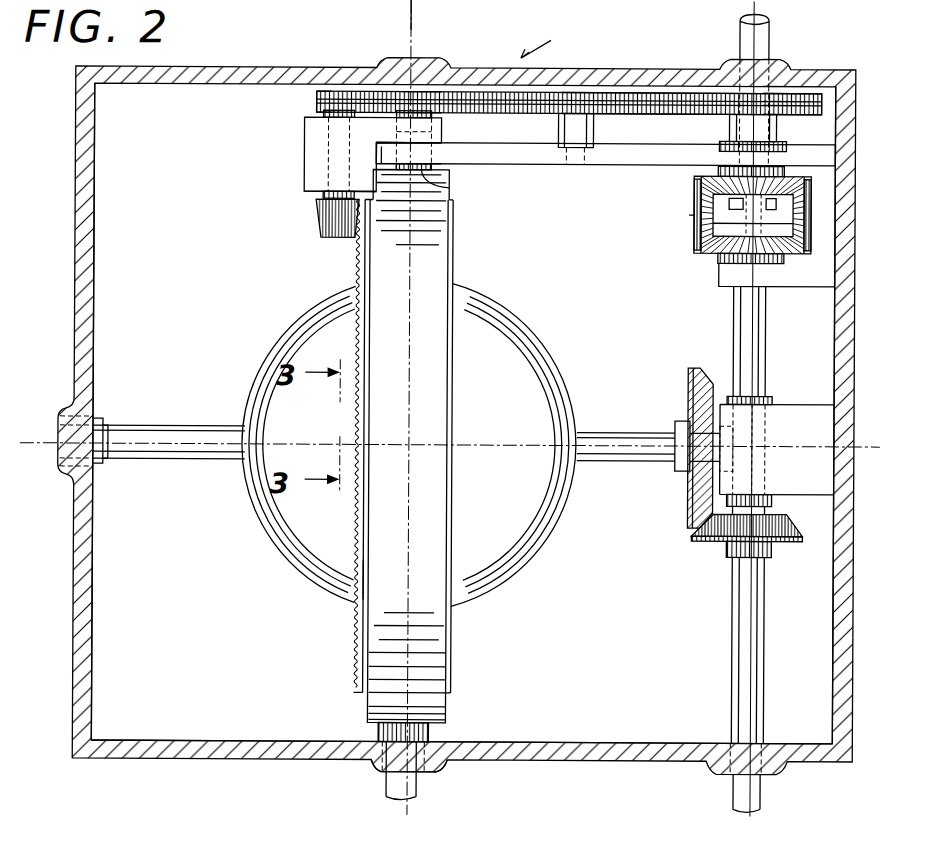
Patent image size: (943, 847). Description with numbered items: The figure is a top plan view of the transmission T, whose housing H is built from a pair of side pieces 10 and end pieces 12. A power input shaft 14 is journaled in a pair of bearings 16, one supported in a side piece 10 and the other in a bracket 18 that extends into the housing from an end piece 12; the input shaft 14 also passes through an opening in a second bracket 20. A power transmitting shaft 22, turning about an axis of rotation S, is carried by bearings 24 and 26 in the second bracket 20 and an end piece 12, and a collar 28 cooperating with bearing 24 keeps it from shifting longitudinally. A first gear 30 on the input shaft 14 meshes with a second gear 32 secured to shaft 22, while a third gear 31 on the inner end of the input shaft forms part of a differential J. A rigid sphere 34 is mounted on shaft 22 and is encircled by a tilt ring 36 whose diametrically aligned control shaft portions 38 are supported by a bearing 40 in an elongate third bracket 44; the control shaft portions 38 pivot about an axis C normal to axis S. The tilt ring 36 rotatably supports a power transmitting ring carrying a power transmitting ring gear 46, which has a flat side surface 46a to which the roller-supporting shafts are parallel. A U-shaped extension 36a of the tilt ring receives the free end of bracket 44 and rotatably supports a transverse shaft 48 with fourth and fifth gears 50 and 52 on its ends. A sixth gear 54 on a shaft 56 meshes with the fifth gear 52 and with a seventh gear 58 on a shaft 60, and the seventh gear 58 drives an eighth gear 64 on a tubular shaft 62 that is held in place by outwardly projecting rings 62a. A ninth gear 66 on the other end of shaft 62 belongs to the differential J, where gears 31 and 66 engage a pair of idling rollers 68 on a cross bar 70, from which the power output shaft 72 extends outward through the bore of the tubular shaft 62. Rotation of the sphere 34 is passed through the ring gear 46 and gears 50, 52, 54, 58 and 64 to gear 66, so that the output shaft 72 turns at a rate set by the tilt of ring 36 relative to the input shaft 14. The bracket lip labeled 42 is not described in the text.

The side pieces 10 is at (226, 68).
The end pieces 12 is at (74, 258).
The power input shaft 14 is at (764, 796).
The bearings 16 is at (764, 286).
The bracket 18 is at (814, 285).
The second bracket 20 is at (822, 412).
The power transmitting shaft 22 is at (590, 462).
The bearing 24 is at (722, 472).
The bearing 26 is at (97, 420).
The collar 28 is at (98, 466).
The first gear 30 is at (716, 540).
The third gear 31 is at (714, 260).
The second gear 32 is at (712, 352).
The rigid sphere 34 is at (306, 580).
The tilt ring 36 is at (447, 688).
The U-shaped extension 36a is at (303, 182).
The control shaft portions 38 is at (448, 186).
The bearing 40 is at (372, 768).
The bracket lip 42 is at (428, 154).
The third bracket 44 is at (510, 164).
The power transmitting ring gear 46 is at (354, 656).
The flat side surface 46a is at (364, 586).
The transverse shaft 48 is at (330, 136).
The fourth gear 50 is at (340, 240).
The fifth gear 52 is at (313, 101).
The sixth gear 54 is at (458, 100).
The shaft 56 is at (424, 92).
The seventh gear 58 is at (612, 100).
The shaft 60 is at (592, 130).
The tubular shaft 62 is at (777, 126).
The outwardly projecting rings 62a is at (718, 168).
The eighth gear 64 is at (822, 100).
The ninth gear 66 is at (806, 184).
The idling rollers 68 is at (696, 232).
The cross bar 70 is at (722, 222).
The power output shaft 72 is at (768, 38).
The axis of rotation C is at (322, 28).
The transmission T is at (545, 39).
The differential J is at (688, 216).
The axis of rotation S is at (776, 446).
The housing H is at (248, 758).